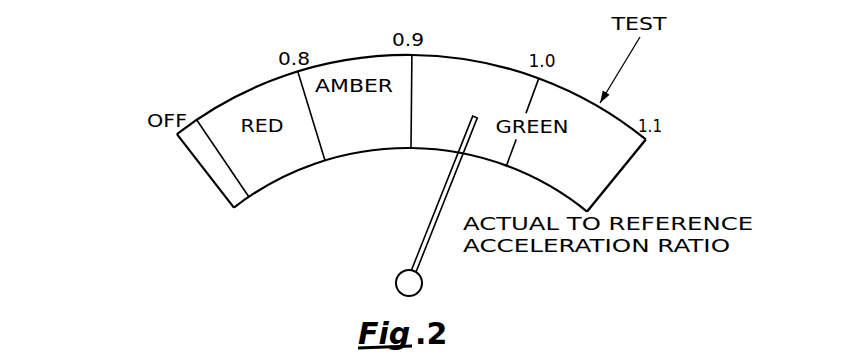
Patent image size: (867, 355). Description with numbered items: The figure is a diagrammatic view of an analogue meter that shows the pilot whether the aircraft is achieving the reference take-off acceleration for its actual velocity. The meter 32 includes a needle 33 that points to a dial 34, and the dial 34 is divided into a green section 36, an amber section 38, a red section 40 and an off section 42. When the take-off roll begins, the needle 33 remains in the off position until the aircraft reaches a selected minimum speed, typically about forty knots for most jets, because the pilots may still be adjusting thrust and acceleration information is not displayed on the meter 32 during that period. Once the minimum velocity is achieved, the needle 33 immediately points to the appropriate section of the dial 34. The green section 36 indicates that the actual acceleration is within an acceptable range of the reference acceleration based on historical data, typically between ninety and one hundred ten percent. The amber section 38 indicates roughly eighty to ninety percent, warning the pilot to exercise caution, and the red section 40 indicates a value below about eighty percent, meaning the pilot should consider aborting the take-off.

The gauge display 32 is at (120, 100).
The needle pointer 33 is at (433, 217).
The off position end 34 is at (230, 210).
The green test region 36 is at (563, 103).
The amber region divider 38 is at (378, 67).
The red region divider 40 is at (258, 98).
The off region divider 42 is at (207, 153).